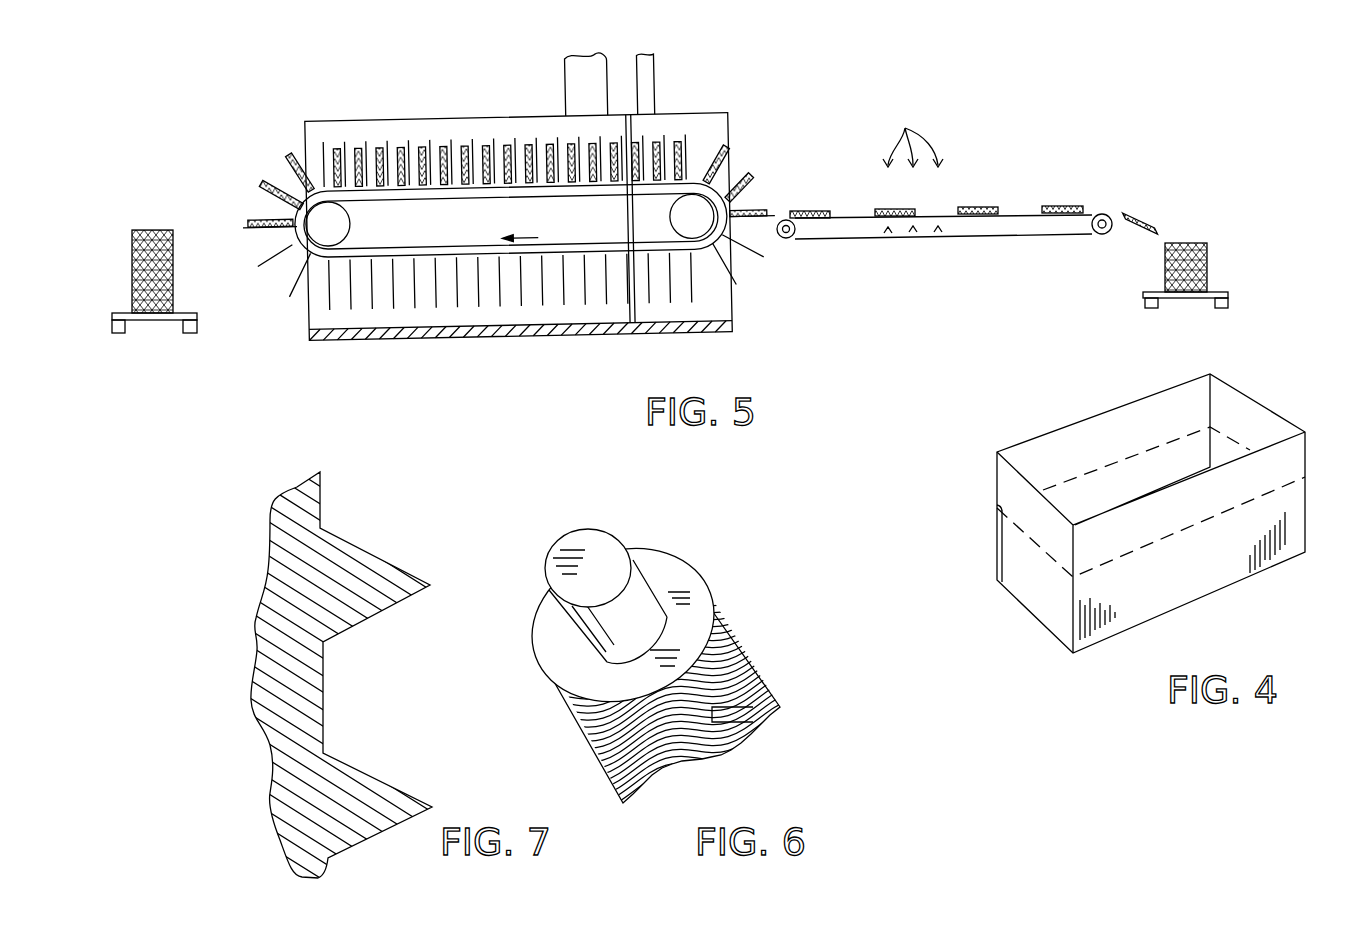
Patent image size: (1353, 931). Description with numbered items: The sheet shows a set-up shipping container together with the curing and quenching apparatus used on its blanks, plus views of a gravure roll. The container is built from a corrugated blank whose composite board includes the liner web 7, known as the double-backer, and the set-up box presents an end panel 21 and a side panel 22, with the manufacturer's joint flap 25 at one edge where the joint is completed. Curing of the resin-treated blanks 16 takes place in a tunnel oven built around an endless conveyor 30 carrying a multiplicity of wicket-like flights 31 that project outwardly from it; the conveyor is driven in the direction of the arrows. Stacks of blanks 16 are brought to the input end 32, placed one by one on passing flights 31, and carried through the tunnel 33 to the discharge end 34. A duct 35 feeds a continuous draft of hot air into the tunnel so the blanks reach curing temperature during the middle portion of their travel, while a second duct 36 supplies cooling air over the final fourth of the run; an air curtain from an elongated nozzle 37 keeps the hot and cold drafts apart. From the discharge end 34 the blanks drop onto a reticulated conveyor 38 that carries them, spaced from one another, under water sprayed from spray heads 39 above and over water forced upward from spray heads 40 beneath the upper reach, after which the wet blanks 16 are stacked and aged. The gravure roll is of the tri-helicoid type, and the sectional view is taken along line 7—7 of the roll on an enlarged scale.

In FIG. 6, the liner web 7 is at (783, 720).
In FIG. 5, the container blanks 16 is at (1256, 265).
In FIG. 4, the end panel 21 is at (1033, 592).
In FIG. 4, the side panel 22 is at (1190, 587).
In FIG. 4, the manufacturer's joint flap 25 is at (997, 543).
In FIG. 5, the endless conveyor 30 is at (426, 188).
In FIG. 5, the wicket-like flights 31 is at (470, 98).
In FIG. 5, the input end 32 is at (268, 248).
In FIG. 5, the tunnel 33 is at (350, 117).
In FIG. 5, the discharge end 34 is at (762, 248).
In FIG. 5, the duct 35 is at (560, 63).
In FIG. 5, the duct 36 is at (650, 59).
In FIG. 5, the elongated nozzle 37 is at (627, 214).
In FIG. 5, the reticulated conveyor 38 is at (850, 241).
In FIG. 5, the spray heads 39 is at (913, 135).
In FIG. 5, the spray heads 40 is at (900, 236).